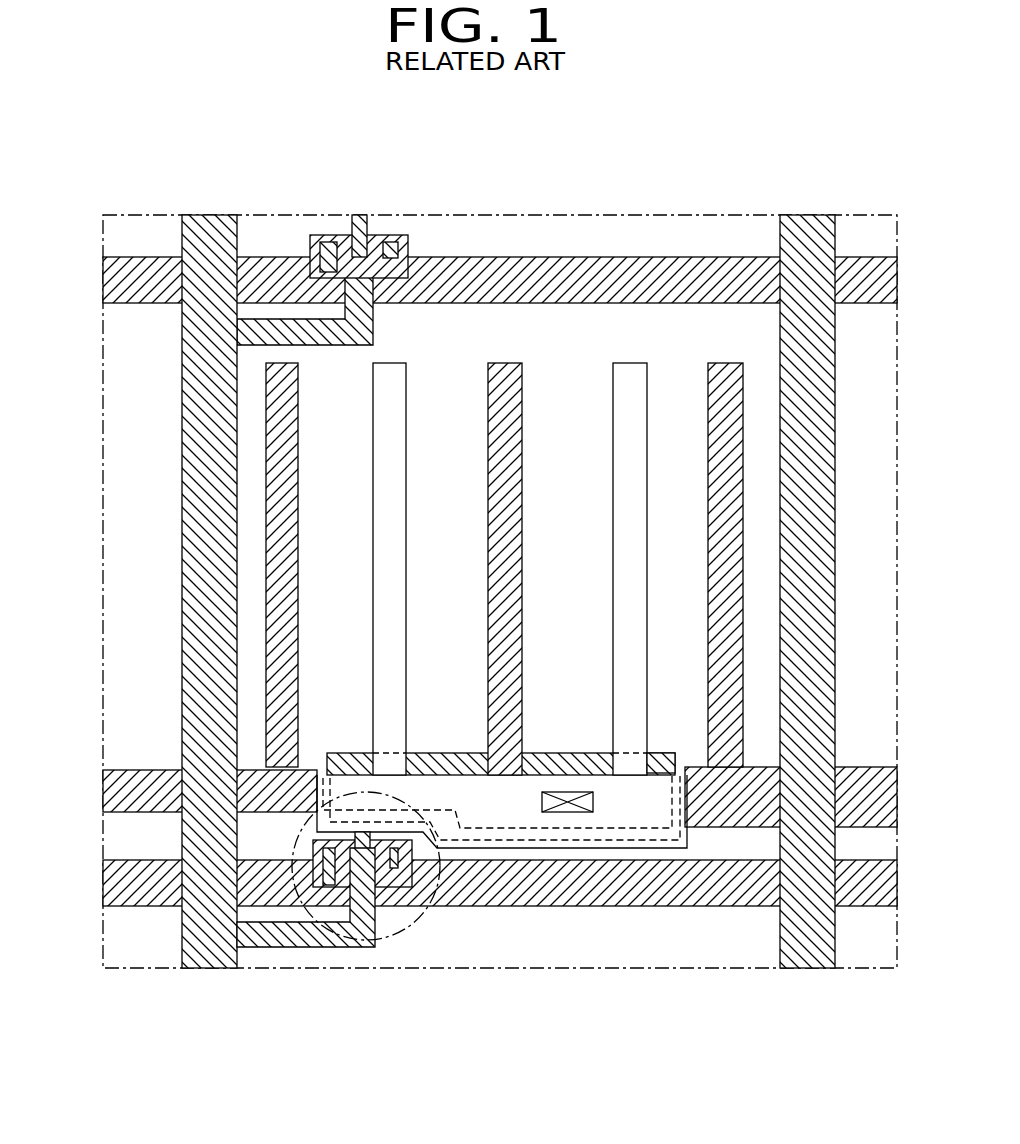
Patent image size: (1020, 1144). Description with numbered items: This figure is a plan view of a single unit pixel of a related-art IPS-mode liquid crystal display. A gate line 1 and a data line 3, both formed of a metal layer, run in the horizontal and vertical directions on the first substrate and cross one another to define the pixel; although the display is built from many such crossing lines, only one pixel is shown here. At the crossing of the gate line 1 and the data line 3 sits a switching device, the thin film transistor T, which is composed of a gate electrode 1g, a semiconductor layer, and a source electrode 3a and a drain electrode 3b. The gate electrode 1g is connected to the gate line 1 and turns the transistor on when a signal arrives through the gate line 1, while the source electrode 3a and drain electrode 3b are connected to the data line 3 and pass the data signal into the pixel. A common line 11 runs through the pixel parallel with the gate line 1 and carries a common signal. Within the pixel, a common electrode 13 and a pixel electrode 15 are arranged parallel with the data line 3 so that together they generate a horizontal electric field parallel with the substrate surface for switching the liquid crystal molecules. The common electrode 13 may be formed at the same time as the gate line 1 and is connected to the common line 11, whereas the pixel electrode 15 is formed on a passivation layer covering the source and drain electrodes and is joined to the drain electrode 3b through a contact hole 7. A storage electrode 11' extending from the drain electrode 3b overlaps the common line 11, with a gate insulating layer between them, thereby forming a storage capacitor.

The gate line 1 is at (771, 880).
The gate electrode 1g is at (405, 893).
The data line 3 is at (190, 394).
The source electrode 3a is at (368, 885).
The drain electrode 3b is at (340, 878).
The contact hole 7 is at (568, 812).
The common line 11 is at (500, 664).
The storage electrode 11' is at (655, 912).
The common electrode 13 is at (508, 372).
The pixel electrode 15 is at (630, 375).
The thin film transistor T is at (345, 932).